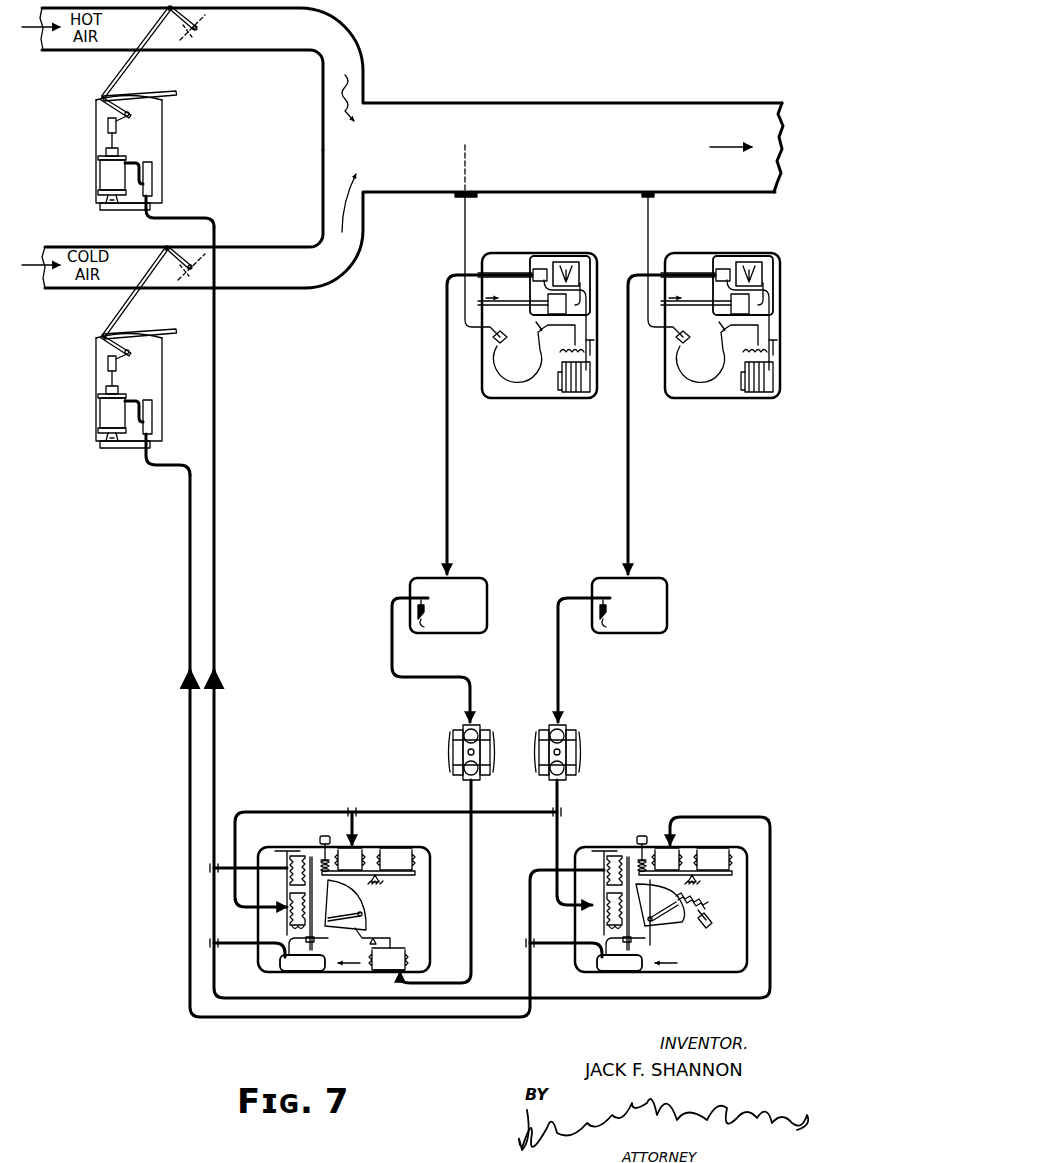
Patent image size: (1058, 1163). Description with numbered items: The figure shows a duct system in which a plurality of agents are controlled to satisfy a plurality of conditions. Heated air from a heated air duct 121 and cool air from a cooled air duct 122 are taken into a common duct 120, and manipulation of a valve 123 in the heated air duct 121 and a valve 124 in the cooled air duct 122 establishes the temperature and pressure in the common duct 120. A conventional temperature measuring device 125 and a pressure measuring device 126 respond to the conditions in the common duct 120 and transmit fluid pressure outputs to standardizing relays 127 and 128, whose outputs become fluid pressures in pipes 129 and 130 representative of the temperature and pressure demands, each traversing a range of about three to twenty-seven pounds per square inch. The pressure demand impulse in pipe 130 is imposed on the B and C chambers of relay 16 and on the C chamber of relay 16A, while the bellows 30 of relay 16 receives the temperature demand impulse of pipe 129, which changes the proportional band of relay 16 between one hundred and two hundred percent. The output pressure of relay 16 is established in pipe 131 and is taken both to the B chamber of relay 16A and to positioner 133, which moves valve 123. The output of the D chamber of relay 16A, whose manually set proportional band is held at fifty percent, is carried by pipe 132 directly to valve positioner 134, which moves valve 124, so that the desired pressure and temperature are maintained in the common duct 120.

The relay 16 is at (360, 898).
The relay 16A is at (589, 848).
The bellows 30 is at (407, 953).
The common duct 120 is at (604, 103).
The heated air duct 121 is at (261, 52).
The cooled air duct 122 is at (257, 245).
The valve 123 is at (205, 17).
The valve 124 is at (187, 280).
The temperature measuring device 125 is at (560, 252).
The pressure measuring device 126 is at (728, 252).
The standardizing relay 127 is at (487, 580).
The standardizing relay 128 is at (667, 580).
The pipe 129 is at (390, 637).
The pipe 130 is at (560, 677).
The pipe 131 is at (216, 757).
The pipe 132 is at (188, 757).
The positioner 133 is at (153, 166).
The valve positioner 134 is at (155, 414).